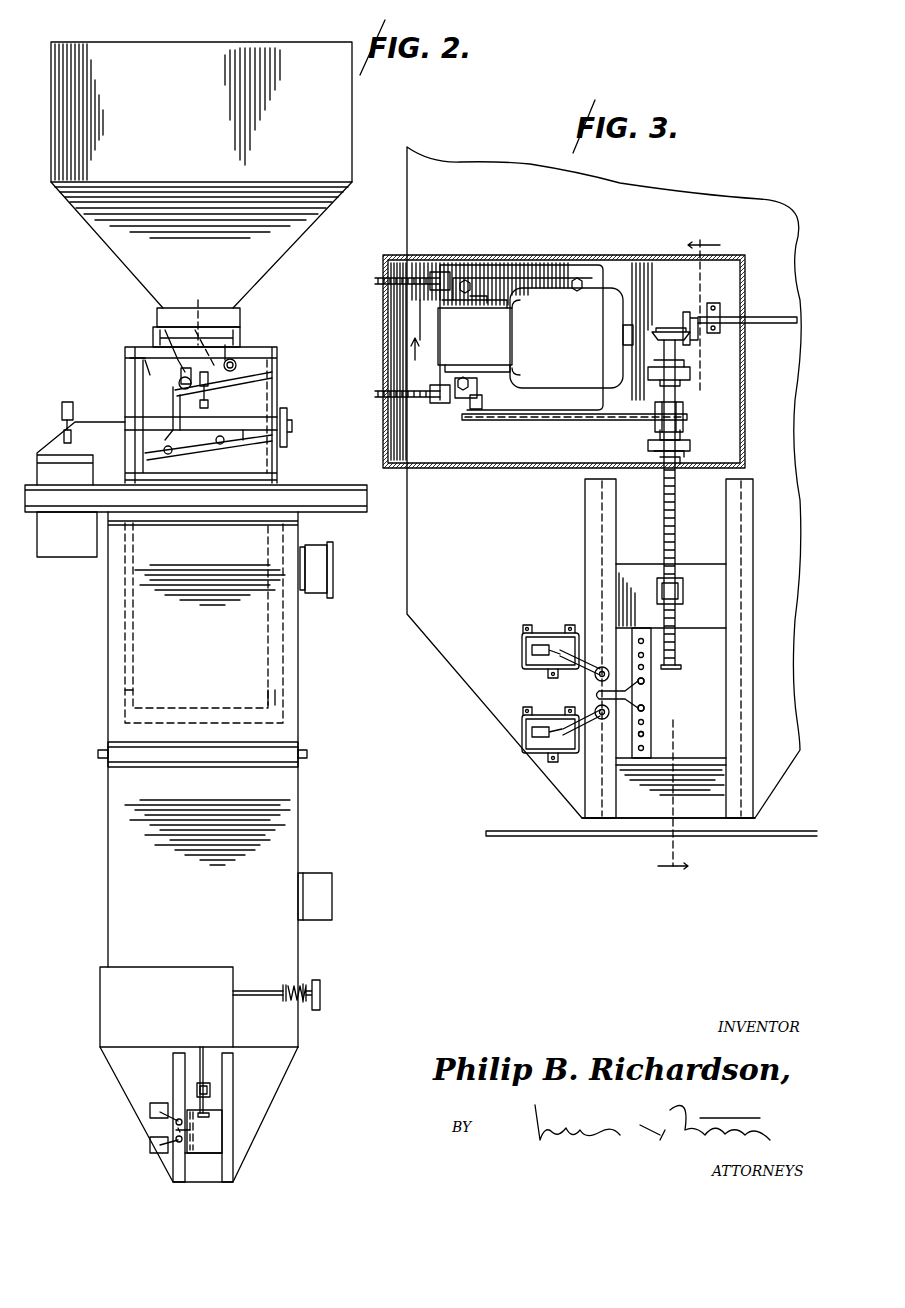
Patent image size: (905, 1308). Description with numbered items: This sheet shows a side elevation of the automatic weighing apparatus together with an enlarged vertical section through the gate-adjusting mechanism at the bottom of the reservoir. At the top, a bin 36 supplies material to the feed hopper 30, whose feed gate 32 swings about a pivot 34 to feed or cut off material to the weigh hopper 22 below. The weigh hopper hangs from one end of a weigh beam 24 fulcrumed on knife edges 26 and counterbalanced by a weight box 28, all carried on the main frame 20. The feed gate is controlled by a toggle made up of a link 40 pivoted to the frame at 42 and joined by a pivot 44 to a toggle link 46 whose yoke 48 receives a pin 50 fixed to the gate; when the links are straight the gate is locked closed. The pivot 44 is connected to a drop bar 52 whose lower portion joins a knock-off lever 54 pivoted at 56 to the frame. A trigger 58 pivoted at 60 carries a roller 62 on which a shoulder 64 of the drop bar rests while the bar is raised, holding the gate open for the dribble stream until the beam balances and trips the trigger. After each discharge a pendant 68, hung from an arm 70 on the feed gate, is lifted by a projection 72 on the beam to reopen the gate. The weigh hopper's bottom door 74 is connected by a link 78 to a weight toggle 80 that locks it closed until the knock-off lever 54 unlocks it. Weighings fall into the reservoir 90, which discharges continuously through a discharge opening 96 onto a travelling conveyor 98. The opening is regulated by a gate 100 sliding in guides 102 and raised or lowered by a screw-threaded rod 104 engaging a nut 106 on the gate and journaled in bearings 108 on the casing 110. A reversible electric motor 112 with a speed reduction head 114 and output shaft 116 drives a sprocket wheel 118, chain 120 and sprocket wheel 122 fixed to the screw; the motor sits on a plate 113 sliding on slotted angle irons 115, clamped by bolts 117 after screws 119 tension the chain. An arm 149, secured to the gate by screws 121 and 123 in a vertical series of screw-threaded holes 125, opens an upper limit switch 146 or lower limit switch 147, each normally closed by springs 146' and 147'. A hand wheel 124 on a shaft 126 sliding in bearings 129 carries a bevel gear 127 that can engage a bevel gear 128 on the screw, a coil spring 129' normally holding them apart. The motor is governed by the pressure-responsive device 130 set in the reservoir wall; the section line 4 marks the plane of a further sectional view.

In FIG. 2, the main frame 20 is at (277, 385).
In FIG. 2, the weigh hopper 22 is at (285, 678).
In FIG. 2, the weigh beam 24 is at (80, 405).
In FIG. 2, the knife edges 26 is at (130, 410).
In FIG. 2, the weight box 28 is at (55, 560).
In FIG. 2, the feed hopper 30 is at (230, 345).
In FIG. 2, the feed gate 32 is at (215, 367).
In FIG. 2, the pivot 34 is at (192, 311).
In FIG. 2, the bin 36 is at (201, 175).
In FIG. 2, the link 40 is at (145, 360).
In FIG. 2, the pivot 42 is at (128, 358).
In FIG. 2, the pivot 44 is at (165, 330).
In FIG. 2, the toggle link 46 is at (196, 327).
In FIG. 2, the yoke 48 is at (237, 366).
In FIG. 2, the pin 50 is at (245, 380).
In FIG. 2, the drop bar 52 is at (178, 452).
In FIG. 2, the knock-off lever 54 is at (243, 443).
In FIG. 2, the pivot 56 is at (215, 482).
In FIG. 2, the trigger 58 is at (208, 404).
In FIG. 2, the pivot 60 is at (173, 415).
In FIG. 2, the roller 62 is at (208, 380).
In FIG. 2, the shoulder 64 is at (178, 388).
In FIG. 2, the pendant 68 is at (180, 377).
In FIG. 2, the arm 70 is at (198, 319).
In FIG. 2, the projection 72 is at (203, 405).
In FIG. 2, the door 74 is at (218, 730).
In FIG. 2, the link 78 is at (300, 620).
In FIG. 2, the weight toggle 80 is at (290, 425).
In FIG. 2, the reservoir 90 is at (300, 800).
In FIG. 3, the reservoir 90 is at (440, 616).
In FIG. 3, the discharge opening 96 is at (730, 820).
In FIG. 3, the travelling conveyor 98 is at (562, 840).
In FIG. 2, the gate 100 is at (215, 1146).
In FIG. 3, the gate 100 is at (658, 752).
In FIG. 2, the guides 102 is at (233, 1092).
In FIG. 3, the guides 102 is at (585, 547).
In FIG. 2, the screw-threaded rod 104 is at (198, 1062).
In FIG. 3, the screw-threaded rod 104 is at (664, 514).
In FIG. 3, the nut 106 is at (684, 592).
In FIG. 3, the bearings 108 is at (692, 373).
In FIG. 2, the casing 110 is at (98, 1005).
In FIG. 3, the casing 110 is at (520, 470).
In FIG. 3, the reversible electric motor 112 is at (571, 338).
In FIG. 3, the plate 113 is at (500, 285).
In FIG. 3, the speed reduction head 114 is at (475, 334).
In FIG. 3, the angle irons 115 is at (415, 330).
In FIG. 3, the output shaft 116 is at (462, 402).
In FIG. 3, the bolts 117 is at (465, 282).
In FIG. 3, the sprocket wheel 118 is at (486, 422).
In FIG. 3, the screws 119 is at (380, 283).
In FIG. 3, the chain 120 is at (552, 422).
In FIG. 3, the screw 121 is at (646, 681).
In FIG. 3, the sprocket wheel 122 is at (684, 425).
In FIG. 3, the screw 123 is at (647, 709).
In FIG. 2, the hand wheel 124 is at (322, 990).
In FIG. 3, the screw-threaded holes 125 is at (647, 734).
In FIG. 2, the shaft 126 is at (251, 998).
In FIG. 3, the shaft 126 is at (772, 316).
In FIG. 3, the bevel gear 127 is at (680, 318).
In FIG. 3, the bevel gear 128 is at (662, 330).
In FIG. 2, the bearings 129 is at (315, 963).
In FIG. 3, the bearings 129 is at (750, 289).
In FIG. 2, the coil spring 129' is at (335, 1014).
In FIG. 2, the pressure-responsive device 130 is at (318, 875).
In FIG. 2, the upper limit switch 146 is at (132, 1109).
In FIG. 3, the upper limit switch 146 is at (565, 639).
In FIG. 3, the spring 146' is at (511, 658).
In FIG. 2, the lower limit switch 147 is at (132, 1156).
In FIG. 3, the lower limit switch 147 is at (539, 749).
In FIG. 3, the spring 147' is at (498, 725).
In FIG. 2, the arm 149 is at (176, 1130).
In FIG. 3, the arm 149 is at (598, 695).
In FIG. 3, the section line 4- 4 is at (689, 559).